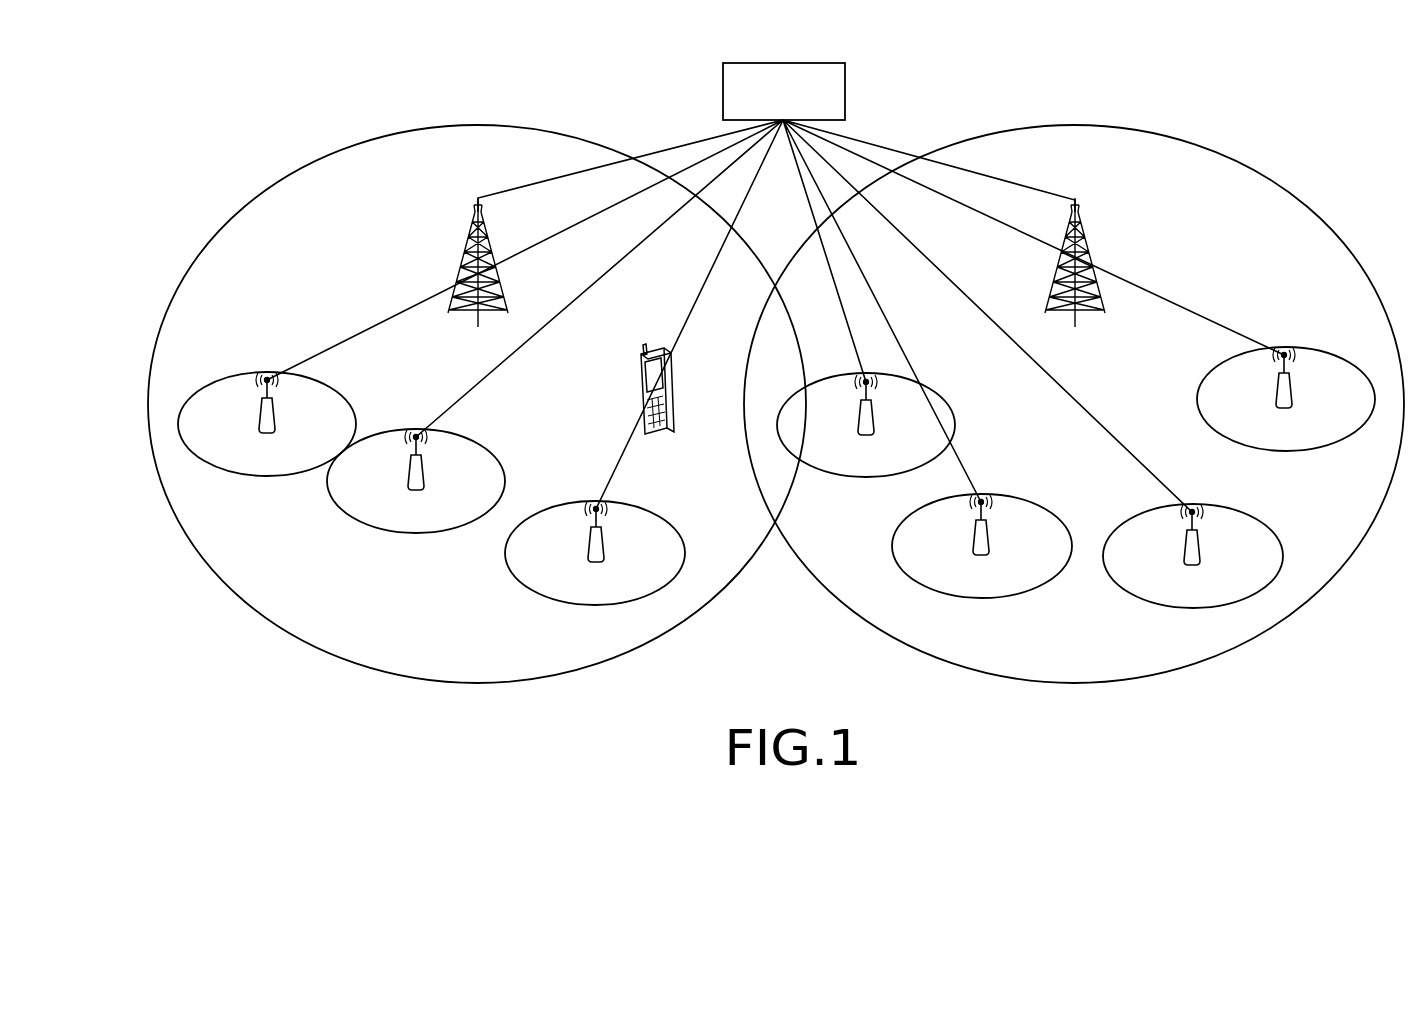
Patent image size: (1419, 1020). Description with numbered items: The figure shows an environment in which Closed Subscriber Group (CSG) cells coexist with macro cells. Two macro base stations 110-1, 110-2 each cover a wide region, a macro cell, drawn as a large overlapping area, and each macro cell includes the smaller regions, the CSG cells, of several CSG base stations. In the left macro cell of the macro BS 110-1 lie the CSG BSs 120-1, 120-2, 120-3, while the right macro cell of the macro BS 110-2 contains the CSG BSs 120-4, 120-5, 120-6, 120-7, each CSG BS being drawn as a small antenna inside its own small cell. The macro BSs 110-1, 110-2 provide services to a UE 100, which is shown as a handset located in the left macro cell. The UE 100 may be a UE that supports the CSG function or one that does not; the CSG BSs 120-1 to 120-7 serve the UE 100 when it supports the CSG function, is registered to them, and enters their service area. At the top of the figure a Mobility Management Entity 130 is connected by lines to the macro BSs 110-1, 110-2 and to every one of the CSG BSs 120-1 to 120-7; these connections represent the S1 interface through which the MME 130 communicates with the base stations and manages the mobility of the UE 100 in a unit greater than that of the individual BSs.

The Mobility Management Entity 130 is at (783, 62).
The macro base station 110-1 is at (465, 249).
The macro base station 110-2 is at (1084, 252).
The UE 100 is at (668, 392).
The CSG base station 120-1 is at (267, 424).
The CSG base station 120-2 is at (416, 481).
The CSG base station 120-3 is at (595, 553).
The CSG base station 120-4 is at (866, 425).
The CSG base station 120-5 is at (982, 546).
The CSG base station 120-6 is at (1193, 556).
The CSG base station 120-7 is at (1286, 399).